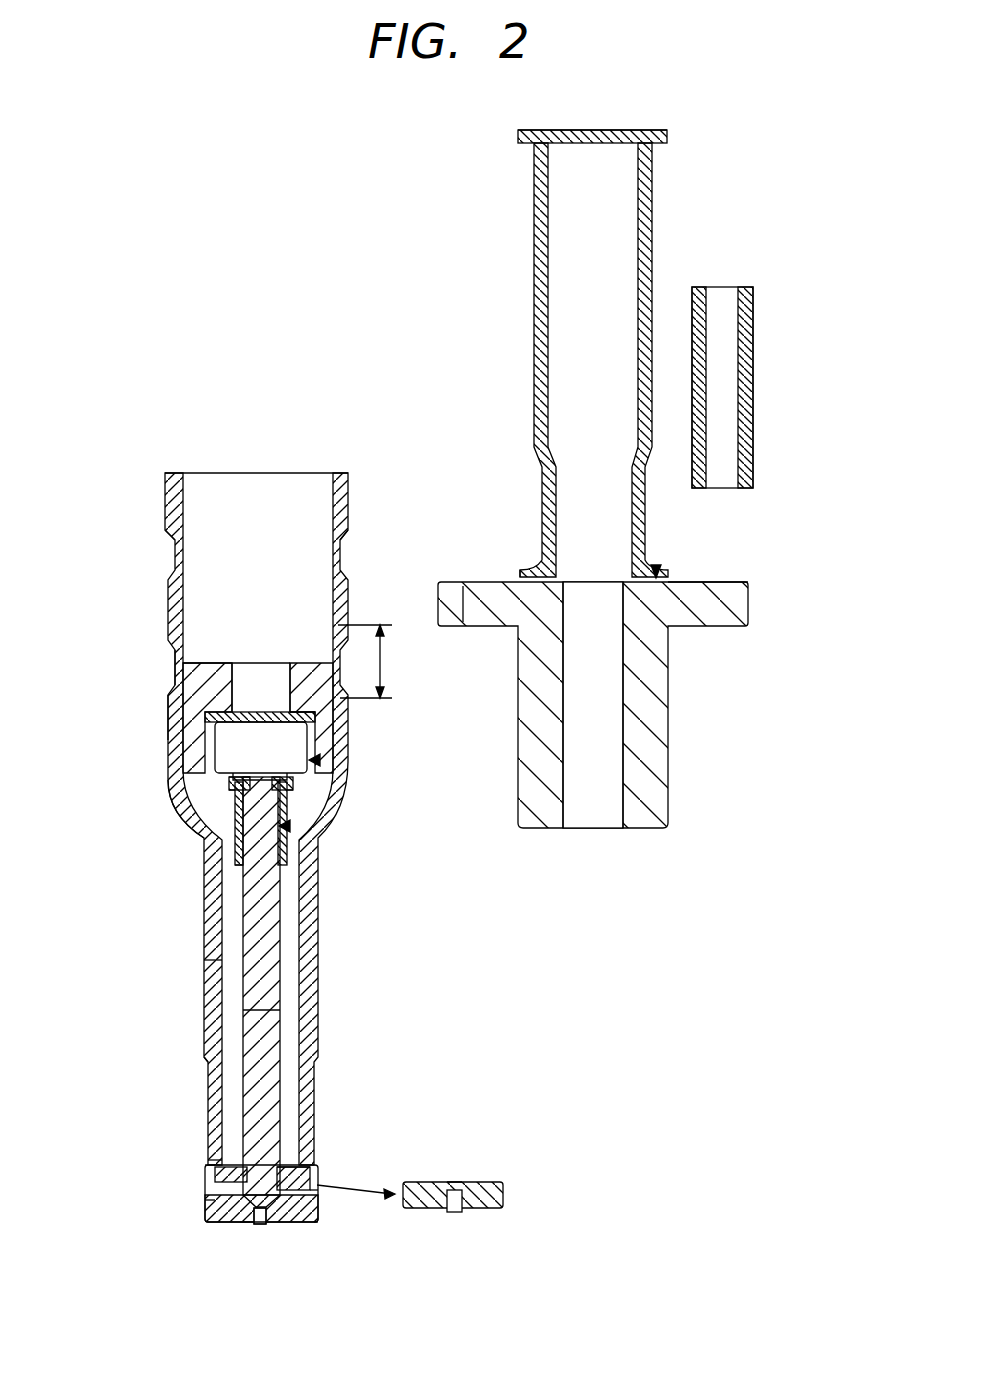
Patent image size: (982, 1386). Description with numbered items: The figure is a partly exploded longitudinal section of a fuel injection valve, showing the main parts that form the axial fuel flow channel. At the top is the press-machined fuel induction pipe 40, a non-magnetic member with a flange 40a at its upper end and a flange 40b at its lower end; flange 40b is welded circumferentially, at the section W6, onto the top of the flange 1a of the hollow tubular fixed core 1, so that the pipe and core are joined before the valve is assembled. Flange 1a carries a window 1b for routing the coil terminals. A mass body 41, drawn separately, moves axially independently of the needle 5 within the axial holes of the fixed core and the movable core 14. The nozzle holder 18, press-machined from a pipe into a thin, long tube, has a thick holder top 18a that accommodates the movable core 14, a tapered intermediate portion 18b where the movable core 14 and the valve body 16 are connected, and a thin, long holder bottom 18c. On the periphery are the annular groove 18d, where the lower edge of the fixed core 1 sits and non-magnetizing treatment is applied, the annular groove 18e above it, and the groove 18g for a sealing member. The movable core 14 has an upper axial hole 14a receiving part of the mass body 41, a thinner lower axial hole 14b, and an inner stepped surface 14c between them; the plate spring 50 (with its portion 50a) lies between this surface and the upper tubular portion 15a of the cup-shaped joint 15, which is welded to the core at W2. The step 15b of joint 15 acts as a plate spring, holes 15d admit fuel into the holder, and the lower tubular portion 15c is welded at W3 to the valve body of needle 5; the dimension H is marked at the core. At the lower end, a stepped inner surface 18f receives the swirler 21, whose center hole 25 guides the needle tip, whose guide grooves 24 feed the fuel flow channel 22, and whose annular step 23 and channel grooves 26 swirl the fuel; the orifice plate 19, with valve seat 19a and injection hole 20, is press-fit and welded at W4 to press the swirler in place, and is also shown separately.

The fixed core 1 is at (662, 712).
The flange 1a is at (732, 604).
The window 1b is at (488, 592).
The needle 5 is at (275, 979).
The movable core 14 is at (215, 686).
The upper axial hole 14a is at (255, 690).
The lower axial hole 14b is at (330, 740).
The inner stepped surface 14c is at (284, 705).
The joint 15 is at (300, 821).
The upper tubular portion 15a is at (212, 745).
The step 15b is at (296, 790).
The lower tubular portion 15c is at (224, 836).
The holes 15d is at (235, 786).
The valve body 16 is at (275, 1014).
The nozzle holder 18 is at (205, 901).
The holder top 18a is at (174, 712).
The intermediate portion 18b is at (195, 800).
The holder bottom 18c is at (212, 972).
The annular groove 18d is at (175, 657).
The annular groove / receiving face 18e is at (170, 558).
The stepped inner surface 18f is at (208, 1166).
The groove 18g is at (212, 1080).
The orifice plate 19 is at (300, 1224).
The valve seat 19a is at (246, 1224).
The injection hole 20 is at (263, 1226).
The swirler 21 is at (305, 1178).
The fuel flow channel 22 is at (300, 1185).
The annular step 23 is at (316, 1192).
The guide grooves 24 is at (297, 1172).
The center hole 25 is at (228, 1176).
The channel grooves 26 is at (216, 1218).
The fuel induction pipe 40 is at (652, 199).
The flange 40a is at (520, 136).
The flange 40b is at (528, 574).
The mass body 41 is at (745, 347).
The plate spring 50 is at (312, 716).
The filter body 50a is at (280, 722).
The height dimension H is at (371, 661).
The welded section W2 is at (320, 760).
The welded section W3 is at (300, 832).
The welding section W4 is at (314, 1218).
The welded section W6 is at (657, 570).